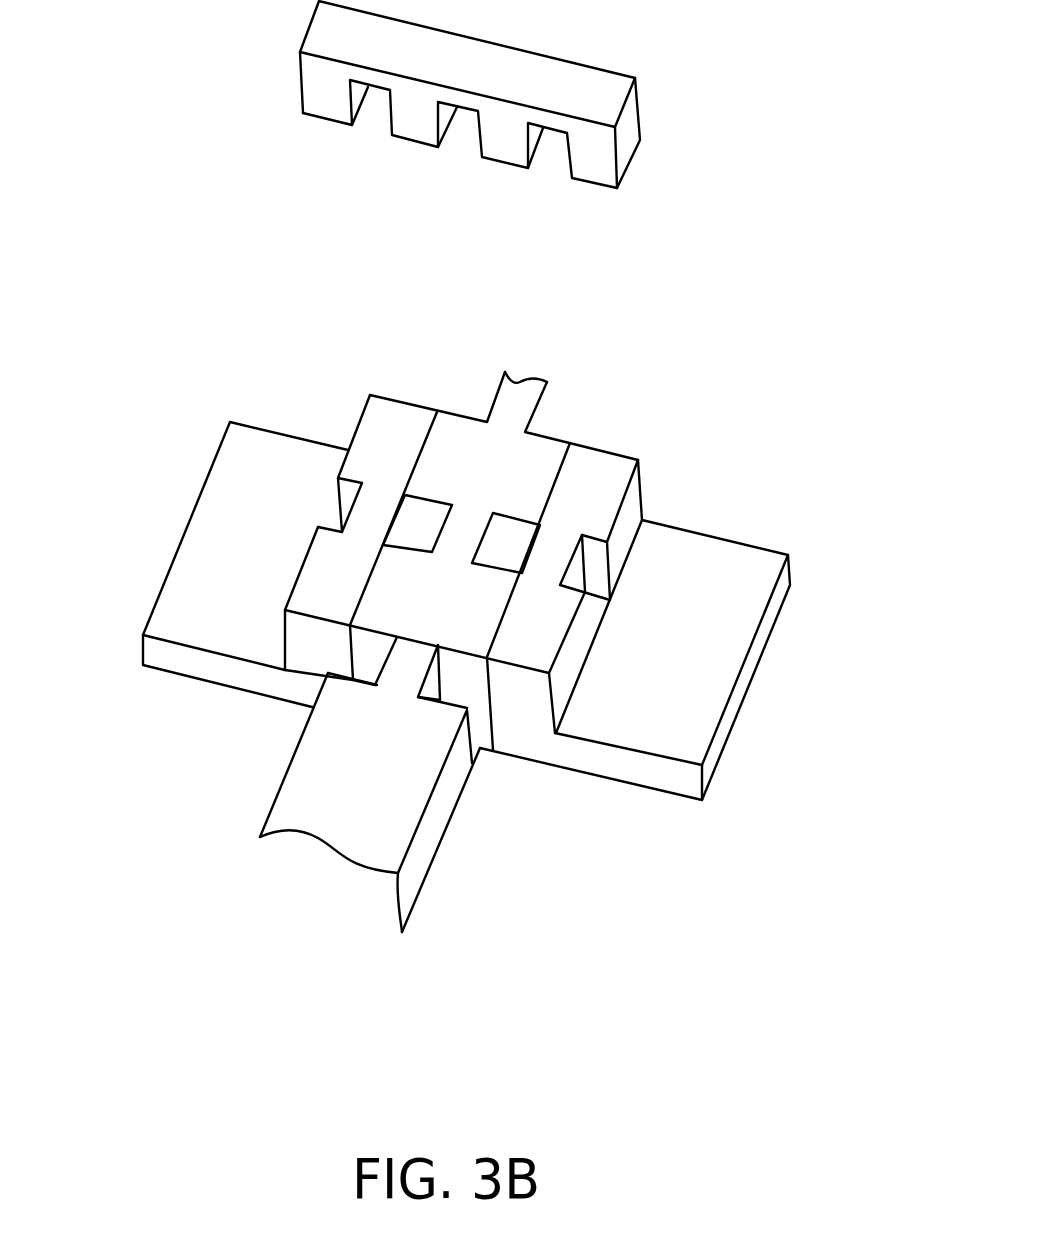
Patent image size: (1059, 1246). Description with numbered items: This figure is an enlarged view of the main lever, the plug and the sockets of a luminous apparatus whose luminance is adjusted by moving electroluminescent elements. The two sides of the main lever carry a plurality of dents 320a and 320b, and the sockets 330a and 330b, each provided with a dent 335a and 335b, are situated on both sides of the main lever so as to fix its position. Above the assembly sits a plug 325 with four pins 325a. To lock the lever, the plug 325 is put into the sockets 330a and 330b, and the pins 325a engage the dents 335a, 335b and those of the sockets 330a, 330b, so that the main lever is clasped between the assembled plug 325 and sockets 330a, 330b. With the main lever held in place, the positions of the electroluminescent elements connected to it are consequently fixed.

The plug 325 is at (413, 241).
The pins 325a is at (332, 100).
The dents 320a is at (500, 555).
The dents 320b is at (413, 528).
The socket 330a is at (679, 635).
The socket 330b is at (201, 508).
The dent 335a is at (600, 613).
The dent 335b is at (323, 503).